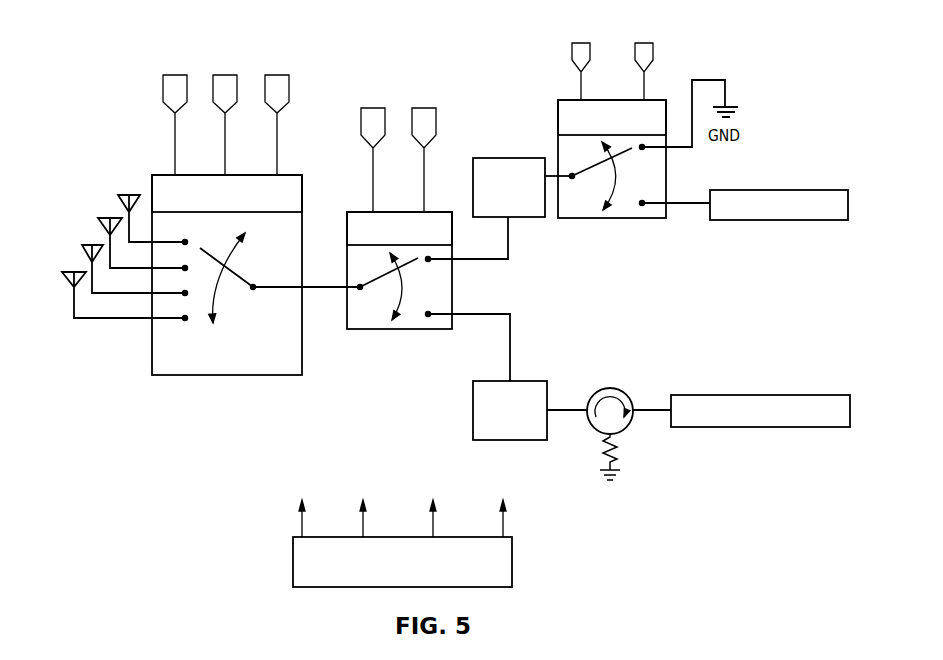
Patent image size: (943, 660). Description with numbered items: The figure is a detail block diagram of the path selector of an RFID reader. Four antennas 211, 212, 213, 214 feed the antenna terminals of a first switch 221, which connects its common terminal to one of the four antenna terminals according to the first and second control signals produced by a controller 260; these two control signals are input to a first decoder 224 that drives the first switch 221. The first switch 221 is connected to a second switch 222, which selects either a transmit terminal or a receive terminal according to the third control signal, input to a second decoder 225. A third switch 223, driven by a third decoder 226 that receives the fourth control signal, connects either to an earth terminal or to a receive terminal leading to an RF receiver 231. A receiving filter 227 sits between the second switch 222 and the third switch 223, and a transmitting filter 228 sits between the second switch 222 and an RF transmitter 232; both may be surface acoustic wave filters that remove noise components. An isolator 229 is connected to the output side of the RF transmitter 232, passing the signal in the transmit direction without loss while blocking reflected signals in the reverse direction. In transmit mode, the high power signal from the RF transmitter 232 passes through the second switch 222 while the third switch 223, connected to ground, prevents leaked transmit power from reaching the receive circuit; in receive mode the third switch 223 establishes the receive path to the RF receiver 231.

The antenna 211 is at (130, 193).
The antenna 212 is at (108, 217).
The antenna 213 is at (91, 245).
The antenna 214 is at (73, 272).
The first switch 221 is at (225, 375).
The second switch 222 is at (398, 329).
The third switch 223 is at (623, 218).
The first decoder 224 is at (302, 193).
The second decoder 225 is at (438, 210).
The third decoder 226 is at (571, 100).
The receiving filter 227 is at (500, 158).
The transmitting filter 228 is at (485, 381).
The isolator 229 is at (608, 387).
The RF receiver 231 is at (767, 190).
The RF transmitter 232 is at (727, 395).
The controller 260 is at (512, 560).